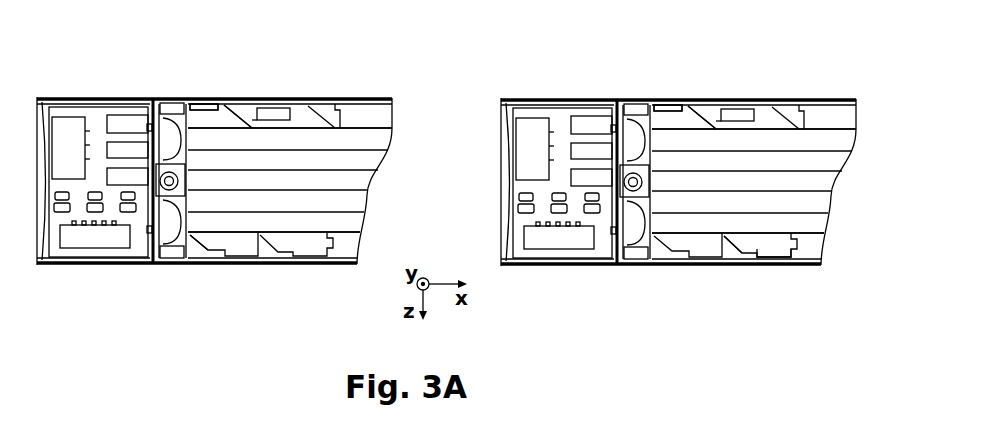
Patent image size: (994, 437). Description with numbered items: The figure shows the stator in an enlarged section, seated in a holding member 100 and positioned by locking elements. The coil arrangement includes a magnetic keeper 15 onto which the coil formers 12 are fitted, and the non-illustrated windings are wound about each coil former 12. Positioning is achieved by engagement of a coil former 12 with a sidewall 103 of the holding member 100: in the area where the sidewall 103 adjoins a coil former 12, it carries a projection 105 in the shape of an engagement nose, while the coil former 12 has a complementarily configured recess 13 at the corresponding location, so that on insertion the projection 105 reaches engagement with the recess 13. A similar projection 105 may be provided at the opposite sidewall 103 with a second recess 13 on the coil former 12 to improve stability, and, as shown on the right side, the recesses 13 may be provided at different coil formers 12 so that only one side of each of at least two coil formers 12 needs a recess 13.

The holding member 100 is at (82, 90).
The coil former 12 is at (222, 119).
The recess 13 is at (215, 98).
The magnetic keeper 15 is at (235, 222).
The sidewall 103 is at (338, 98).
The projection 105 is at (225, 99).